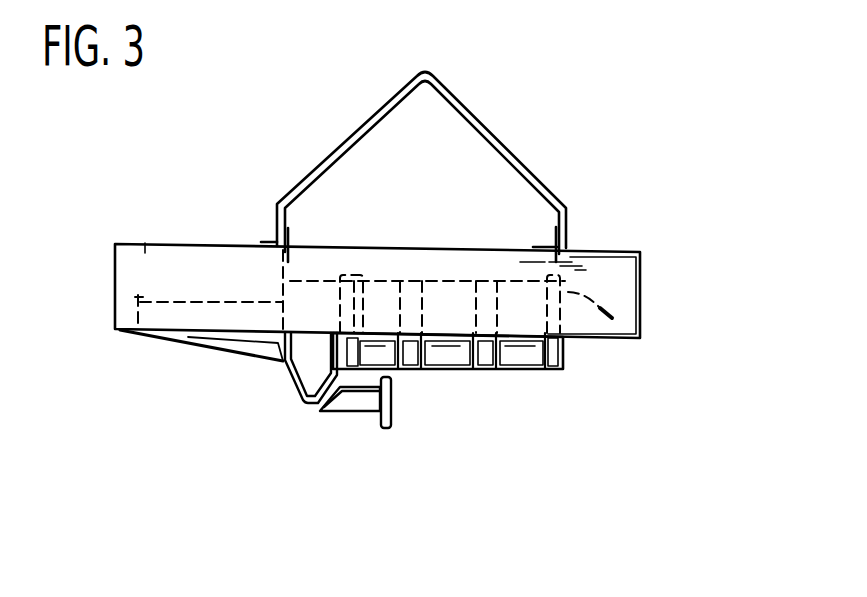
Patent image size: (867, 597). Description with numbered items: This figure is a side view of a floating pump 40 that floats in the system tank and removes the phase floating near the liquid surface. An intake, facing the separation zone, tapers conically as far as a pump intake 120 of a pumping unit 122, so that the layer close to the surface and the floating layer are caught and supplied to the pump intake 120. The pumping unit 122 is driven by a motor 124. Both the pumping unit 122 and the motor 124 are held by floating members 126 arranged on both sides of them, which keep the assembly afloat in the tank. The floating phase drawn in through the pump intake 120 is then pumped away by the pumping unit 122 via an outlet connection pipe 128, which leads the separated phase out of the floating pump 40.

The floating pump 40 is at (645, 208).
The pump intake 120 is at (278, 345).
The pumping unit 122 is at (310, 370).
The motor 124 is at (455, 357).
The floating members 126 is at (147, 255).
The outlet connection pipe 128 is at (393, 405).